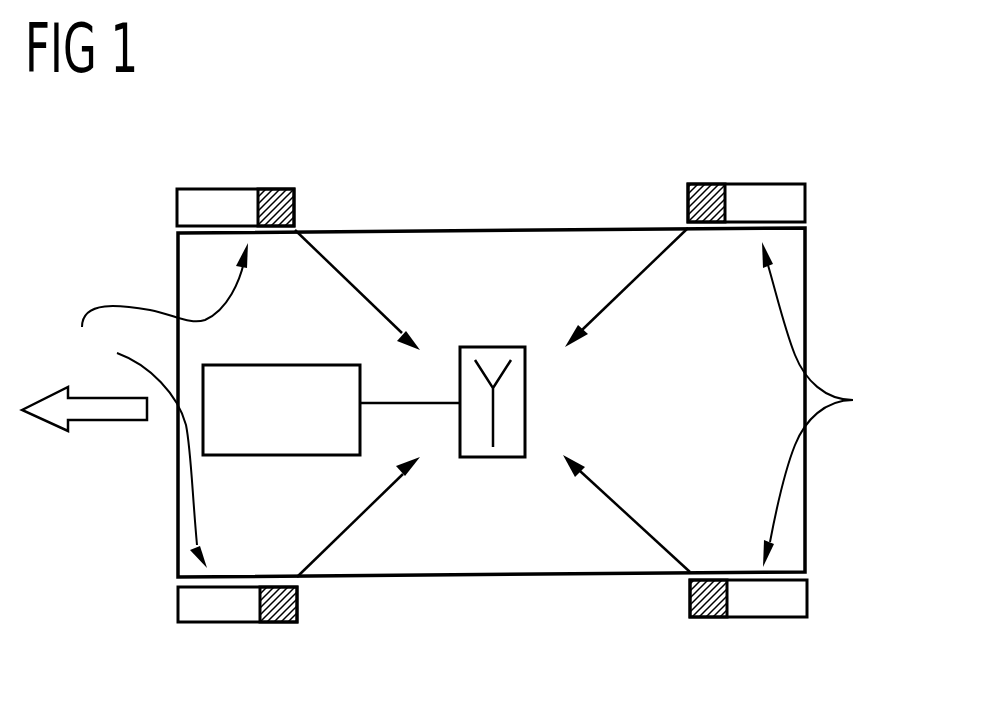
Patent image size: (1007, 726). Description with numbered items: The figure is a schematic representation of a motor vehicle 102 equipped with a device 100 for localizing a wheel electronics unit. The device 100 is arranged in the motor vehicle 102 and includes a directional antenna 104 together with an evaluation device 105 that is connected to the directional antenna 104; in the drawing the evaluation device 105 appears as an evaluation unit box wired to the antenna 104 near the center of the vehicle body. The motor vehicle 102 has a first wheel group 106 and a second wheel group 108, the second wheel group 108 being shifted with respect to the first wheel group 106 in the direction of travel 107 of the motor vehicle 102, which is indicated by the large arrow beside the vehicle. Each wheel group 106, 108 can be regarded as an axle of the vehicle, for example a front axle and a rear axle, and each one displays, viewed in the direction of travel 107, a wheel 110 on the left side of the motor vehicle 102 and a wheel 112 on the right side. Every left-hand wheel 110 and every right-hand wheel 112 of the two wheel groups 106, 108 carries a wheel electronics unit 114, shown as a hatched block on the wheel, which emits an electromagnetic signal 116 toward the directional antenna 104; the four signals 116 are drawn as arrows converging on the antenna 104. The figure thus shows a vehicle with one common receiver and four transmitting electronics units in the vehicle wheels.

The device for localizing a wheel electronics unit 100 is at (183, 283).
The motor vehicle 102 is at (520, 248).
The directional antenna 104 is at (510, 415).
The evaluation device 105 is at (260, 457).
The first wheel group 106 is at (150, 405).
The direction of travel 107 is at (115, 410).
The second wheel group 108 is at (840, 404).
The wheel on the left side 110 is at (192, 603).
The wheel on the right side 112 is at (190, 207).
The wheel electronics unit 114 is at (273, 197).
The electromagnetic signal 116 is at (367, 296).